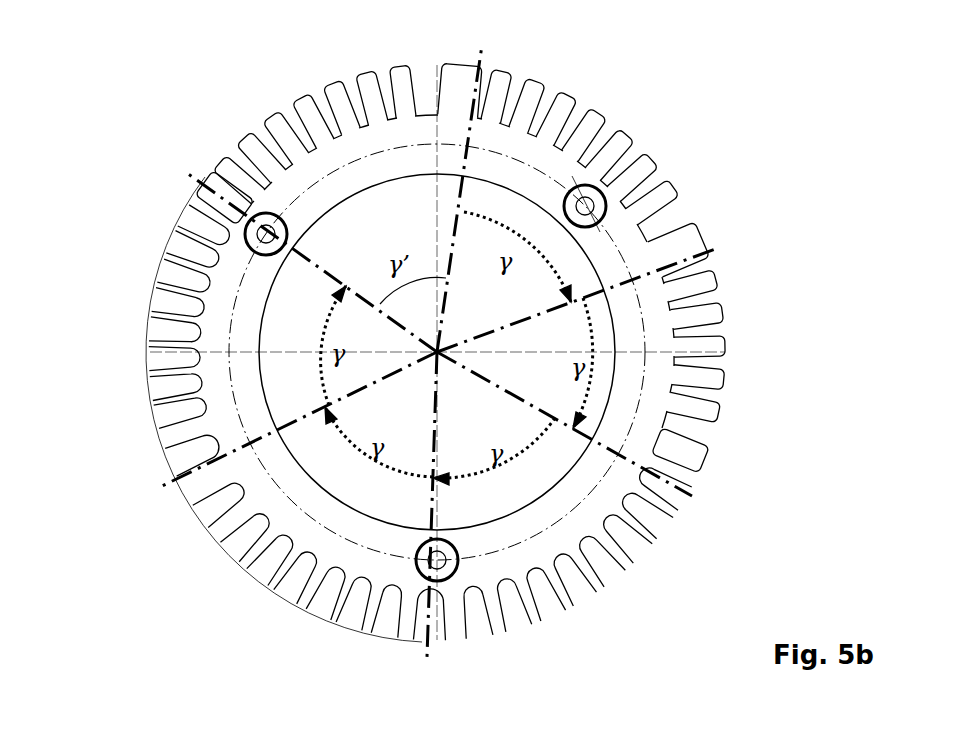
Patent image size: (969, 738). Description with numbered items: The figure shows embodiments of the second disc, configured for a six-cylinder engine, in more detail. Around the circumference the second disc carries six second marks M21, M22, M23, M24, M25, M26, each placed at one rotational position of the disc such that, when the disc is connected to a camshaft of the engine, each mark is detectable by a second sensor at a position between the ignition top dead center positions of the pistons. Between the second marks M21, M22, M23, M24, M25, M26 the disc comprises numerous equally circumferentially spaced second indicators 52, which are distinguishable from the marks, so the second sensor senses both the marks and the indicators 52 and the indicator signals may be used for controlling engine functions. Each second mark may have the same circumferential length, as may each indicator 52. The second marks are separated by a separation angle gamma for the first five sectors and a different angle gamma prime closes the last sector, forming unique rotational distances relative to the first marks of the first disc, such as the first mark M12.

The first mark M12 is at (284, 321).
The second mark M21 is at (457, 83).
The second mark M22 is at (683, 248).
The second mark M23 is at (683, 475).
The second mark M24 is at (442, 610).
The second mark M25 is at (197, 487).
The second mark M26 is at (255, 222).
The second indicator 52 is at (622, 143).